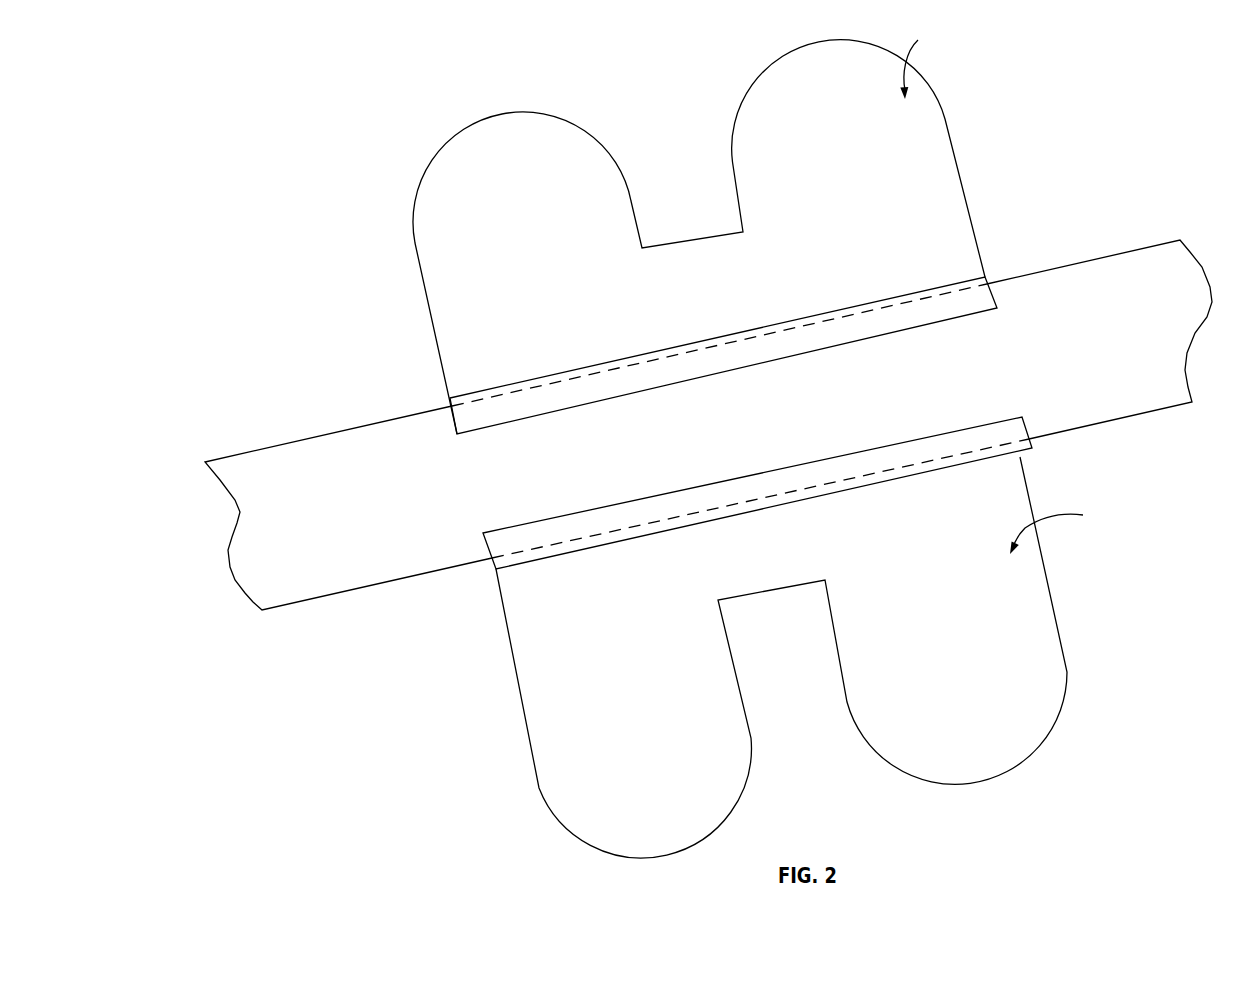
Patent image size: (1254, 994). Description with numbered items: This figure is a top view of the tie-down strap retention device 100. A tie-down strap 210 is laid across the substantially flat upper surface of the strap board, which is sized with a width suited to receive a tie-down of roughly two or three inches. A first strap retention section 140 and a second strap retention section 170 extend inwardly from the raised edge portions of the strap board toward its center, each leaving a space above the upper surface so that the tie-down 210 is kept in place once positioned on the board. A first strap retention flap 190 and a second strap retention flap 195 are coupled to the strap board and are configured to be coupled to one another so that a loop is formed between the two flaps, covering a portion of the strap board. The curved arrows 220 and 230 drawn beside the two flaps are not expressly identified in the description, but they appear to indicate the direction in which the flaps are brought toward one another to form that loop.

The tie-down strap retention device 100 is at (271, 176).
The first strap retention section 140 is at (502, 543).
The second strap retention section 170 is at (470, 417).
The first strap retention flap 190 is at (920, 165).
The second strap retention flap 195 is at (1037, 662).
The tie-down strap 210 is at (325, 572).
The folding direction of upper contact member 220 is at (932, 60).
The folding direction of lower contact member 230 is at (1069, 532).